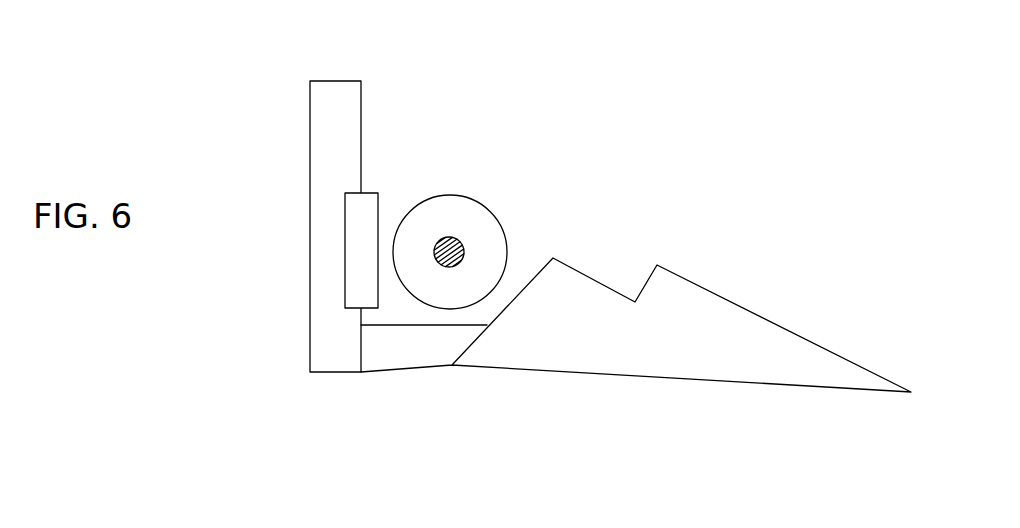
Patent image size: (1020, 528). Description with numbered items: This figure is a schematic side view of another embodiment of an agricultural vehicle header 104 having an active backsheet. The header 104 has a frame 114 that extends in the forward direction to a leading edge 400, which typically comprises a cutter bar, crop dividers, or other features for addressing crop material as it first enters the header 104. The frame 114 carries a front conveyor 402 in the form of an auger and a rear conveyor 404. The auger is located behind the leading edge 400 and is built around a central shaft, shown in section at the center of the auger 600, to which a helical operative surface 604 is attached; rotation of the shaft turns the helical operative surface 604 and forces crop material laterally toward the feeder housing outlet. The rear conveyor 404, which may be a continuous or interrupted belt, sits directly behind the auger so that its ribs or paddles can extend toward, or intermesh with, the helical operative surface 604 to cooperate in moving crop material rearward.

The header 104 is at (637, 299).
The frame 114 is at (352, 97).
The leading edge 400 is at (911, 392).
The front conveyor 402 is at (493, 207).
The rear conveyor 404 is at (341, 207).
The axle 600 is at (465, 248).
The helical operative surface 604 is at (462, 213).